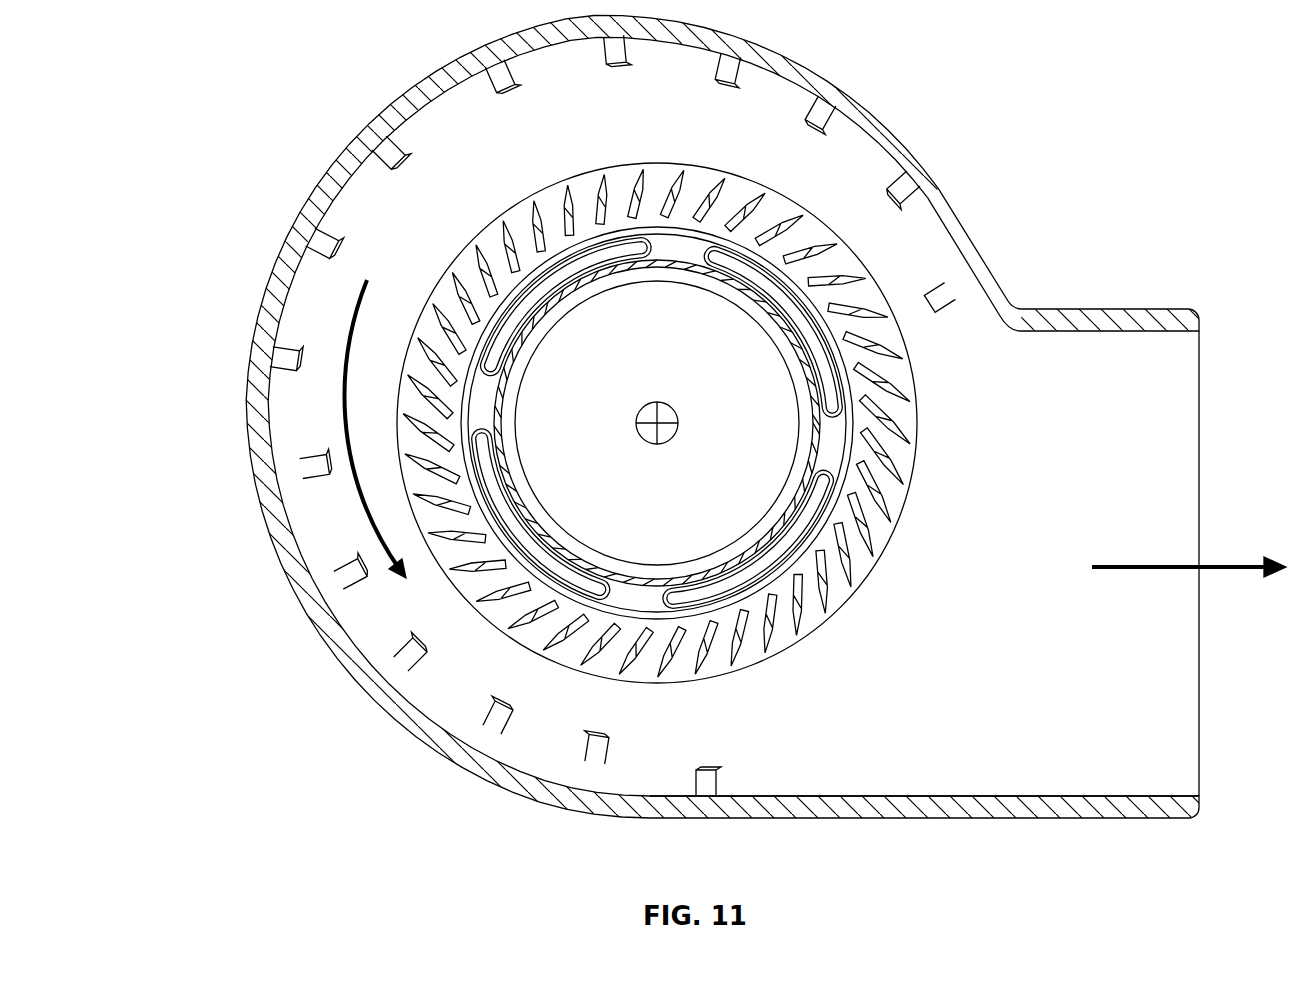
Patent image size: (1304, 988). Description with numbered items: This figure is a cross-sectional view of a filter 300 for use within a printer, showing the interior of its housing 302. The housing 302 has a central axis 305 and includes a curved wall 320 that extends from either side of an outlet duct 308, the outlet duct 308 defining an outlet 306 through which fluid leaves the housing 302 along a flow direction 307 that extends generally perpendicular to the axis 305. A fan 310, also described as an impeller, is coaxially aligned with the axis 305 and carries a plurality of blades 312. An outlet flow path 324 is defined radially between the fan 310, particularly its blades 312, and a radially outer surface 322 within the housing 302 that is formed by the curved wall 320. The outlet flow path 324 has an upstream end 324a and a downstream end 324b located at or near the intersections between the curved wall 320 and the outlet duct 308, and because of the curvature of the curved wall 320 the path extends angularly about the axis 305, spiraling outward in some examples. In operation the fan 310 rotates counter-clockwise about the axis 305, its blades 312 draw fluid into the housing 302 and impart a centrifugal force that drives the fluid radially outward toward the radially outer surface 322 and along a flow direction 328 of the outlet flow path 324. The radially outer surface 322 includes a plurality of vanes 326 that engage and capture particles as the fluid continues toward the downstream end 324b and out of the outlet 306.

The filter 300 is at (717, 437).
The housing 302 is at (766, 414).
The central axis 305 is at (633, 436).
The outlet 306 is at (1174, 370).
The flow direction 307 is at (1143, 560).
The outlet duct 308 is at (1146, 310).
The fan 310 is at (694, 440).
The blades 312 is at (583, 186).
The curved wall 320 is at (396, 99).
The radially outer surface 322 is at (532, 62).
The outlet flow path 324 is at (703, 450).
The upstream end 324a is at (915, 293).
The downstream end 324b is at (722, 755).
The vanes 326 is at (608, 68).
The flow direction 328 is at (345, 396).